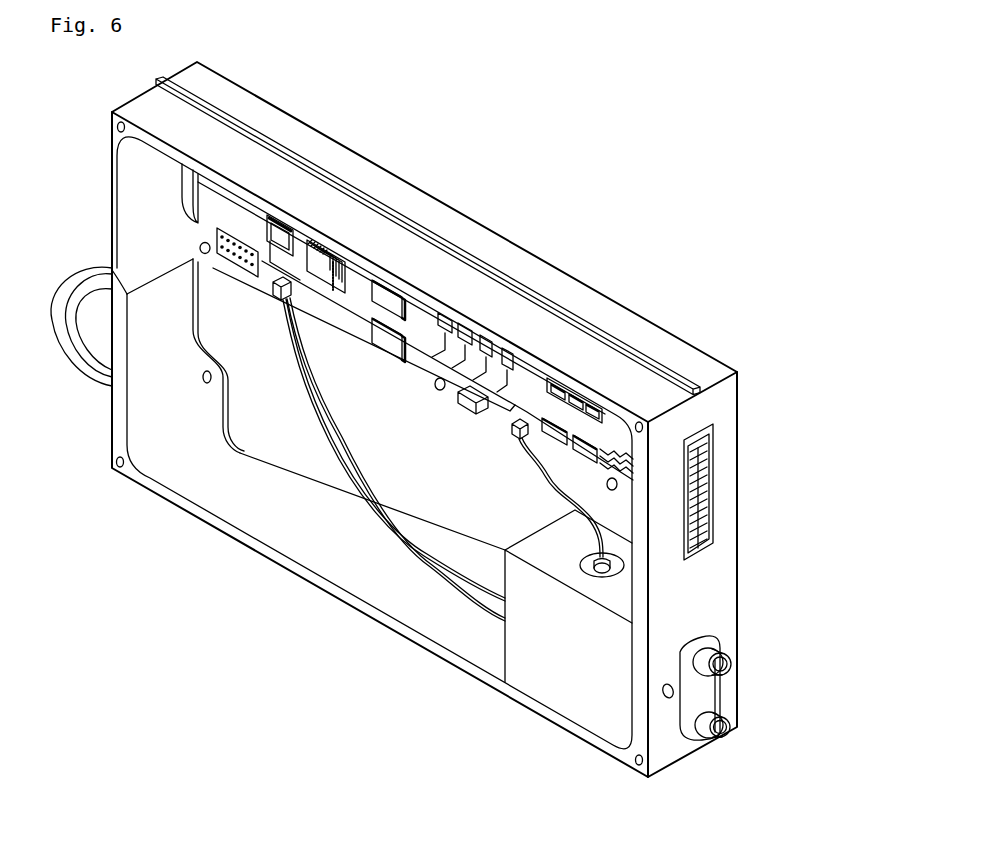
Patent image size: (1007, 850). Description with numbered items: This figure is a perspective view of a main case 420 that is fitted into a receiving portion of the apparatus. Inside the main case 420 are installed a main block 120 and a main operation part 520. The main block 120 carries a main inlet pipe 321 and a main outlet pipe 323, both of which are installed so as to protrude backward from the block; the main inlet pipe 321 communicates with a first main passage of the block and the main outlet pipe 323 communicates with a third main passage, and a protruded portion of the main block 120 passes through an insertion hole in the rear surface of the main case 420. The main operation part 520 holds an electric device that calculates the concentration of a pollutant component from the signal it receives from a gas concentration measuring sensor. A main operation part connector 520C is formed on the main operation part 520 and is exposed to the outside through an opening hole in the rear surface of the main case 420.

The main case 420 is at (262, 506).
The main operation part 520 is at (362, 278).
The main operation part connector 520C is at (713, 455).
The main block 120 is at (575, 681).
The main outlet pipe 323 is at (722, 668).
The main inlet pipe 321 is at (722, 729).